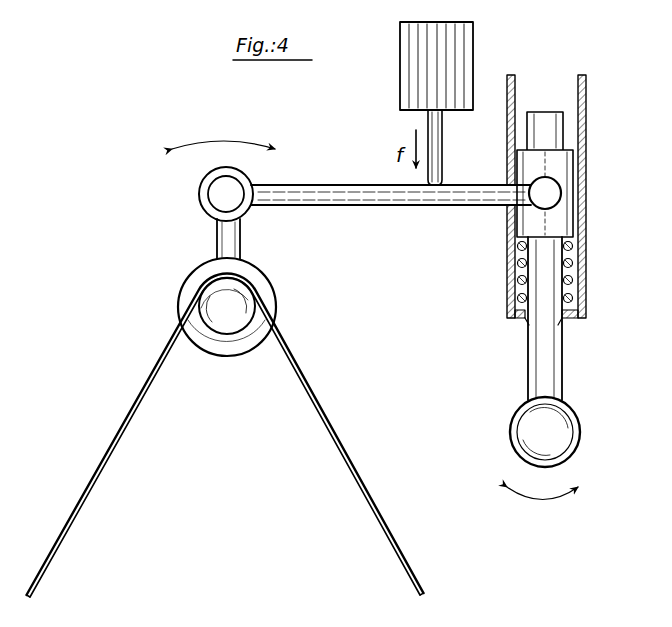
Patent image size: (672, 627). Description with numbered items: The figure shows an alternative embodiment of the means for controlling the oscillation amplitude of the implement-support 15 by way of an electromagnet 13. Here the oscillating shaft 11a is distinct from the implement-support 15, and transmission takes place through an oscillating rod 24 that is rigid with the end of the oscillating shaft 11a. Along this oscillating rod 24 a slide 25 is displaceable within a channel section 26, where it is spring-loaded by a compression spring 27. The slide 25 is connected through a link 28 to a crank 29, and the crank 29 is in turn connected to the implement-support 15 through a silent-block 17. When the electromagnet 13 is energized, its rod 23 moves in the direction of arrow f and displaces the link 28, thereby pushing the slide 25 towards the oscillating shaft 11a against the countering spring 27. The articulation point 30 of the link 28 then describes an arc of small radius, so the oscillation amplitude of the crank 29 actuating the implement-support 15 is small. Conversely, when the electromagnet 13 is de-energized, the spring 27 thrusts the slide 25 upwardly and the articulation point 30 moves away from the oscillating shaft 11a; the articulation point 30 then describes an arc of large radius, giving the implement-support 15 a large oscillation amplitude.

The electromagnet 13 is at (408, 68).
The rod 23 is at (441, 144).
The channel section 26 is at (512, 90).
The articulation point 30 is at (561, 193).
The link 28 is at (364, 208).
The slide 25 is at (511, 220).
The crank 29 is at (226, 240).
The compression spring 27 is at (517, 321).
The oscillating rod 24 is at (565, 368).
The silent-block 17 is at (240, 356).
The oscillating shaft 11a is at (533, 426).
The implement-support 15 is at (362, 488).